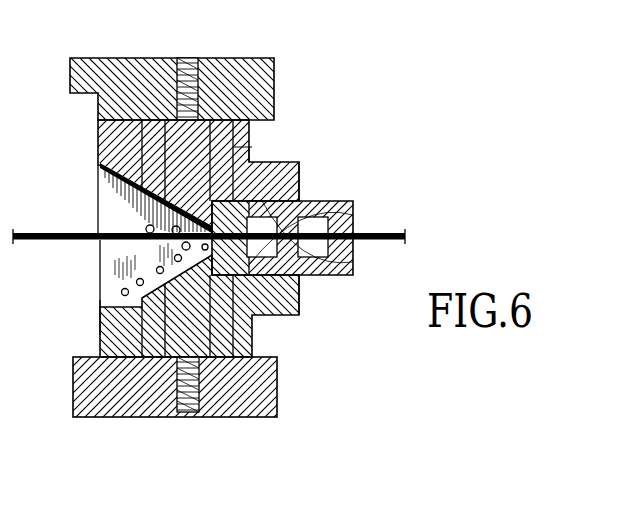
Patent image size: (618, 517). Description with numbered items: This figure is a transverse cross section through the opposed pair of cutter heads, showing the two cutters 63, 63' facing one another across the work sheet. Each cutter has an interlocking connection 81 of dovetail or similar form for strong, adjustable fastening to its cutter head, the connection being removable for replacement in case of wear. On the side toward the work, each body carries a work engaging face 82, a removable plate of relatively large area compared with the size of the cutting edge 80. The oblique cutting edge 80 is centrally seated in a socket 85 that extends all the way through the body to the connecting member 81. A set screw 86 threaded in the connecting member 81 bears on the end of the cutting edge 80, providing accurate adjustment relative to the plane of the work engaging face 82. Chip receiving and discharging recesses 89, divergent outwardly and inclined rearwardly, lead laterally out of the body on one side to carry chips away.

The interlocking connection 81 is at (260, 103).
The set screw 86 is at (190, 60).
The oblique cutting edge 80 is at (140, 215).
The work engaging face 82 is at (345, 201).
The socket 85 is at (236, 147).
The cutter 63 is at (209, 163).
The cutter 63' is at (63, 327).
The chip receiving and discharging recess 89 is at (110, 193).